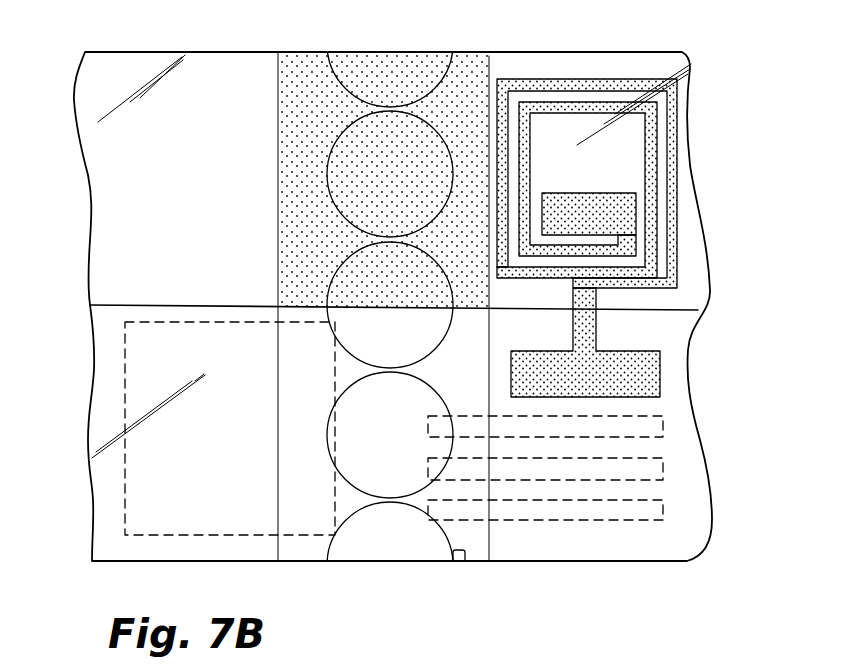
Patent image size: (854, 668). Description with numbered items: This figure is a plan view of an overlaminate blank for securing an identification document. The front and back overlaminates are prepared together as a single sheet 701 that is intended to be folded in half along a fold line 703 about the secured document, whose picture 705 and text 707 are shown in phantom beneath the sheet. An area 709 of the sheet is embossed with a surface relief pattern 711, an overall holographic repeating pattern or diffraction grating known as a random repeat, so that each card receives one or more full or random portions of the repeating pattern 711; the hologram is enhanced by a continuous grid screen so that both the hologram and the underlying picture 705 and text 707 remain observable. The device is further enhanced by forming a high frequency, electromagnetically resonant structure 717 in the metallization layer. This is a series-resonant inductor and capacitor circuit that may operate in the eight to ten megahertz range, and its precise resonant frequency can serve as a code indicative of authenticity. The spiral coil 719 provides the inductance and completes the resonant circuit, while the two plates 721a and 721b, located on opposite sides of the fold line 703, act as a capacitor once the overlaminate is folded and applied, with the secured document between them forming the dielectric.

The single sheet 701 is at (86, 224).
The fold line 703 is at (105, 305).
The picture 705 is at (193, 535).
The text 707 is at (537, 520).
The embossed area 709 is at (488, 52).
The surface relief pattern 711 is at (465, 561).
The electromagnetically resonant structure 717 is at (630, 153).
The inductor coil 719 is at (683, 145).
The capacitor plate 721a is at (613, 194).
The capacitor plate 721b is at (660, 388).